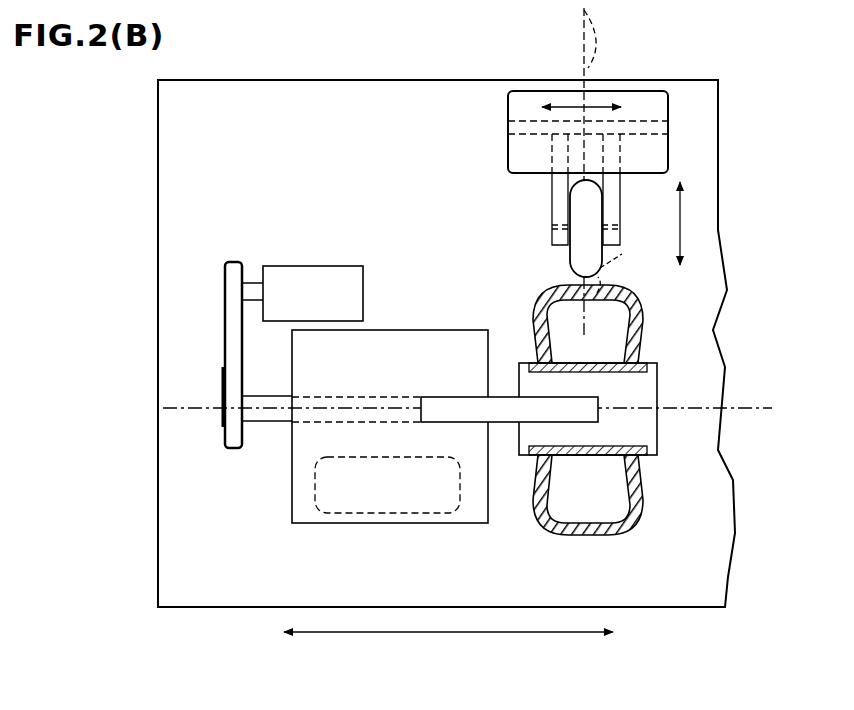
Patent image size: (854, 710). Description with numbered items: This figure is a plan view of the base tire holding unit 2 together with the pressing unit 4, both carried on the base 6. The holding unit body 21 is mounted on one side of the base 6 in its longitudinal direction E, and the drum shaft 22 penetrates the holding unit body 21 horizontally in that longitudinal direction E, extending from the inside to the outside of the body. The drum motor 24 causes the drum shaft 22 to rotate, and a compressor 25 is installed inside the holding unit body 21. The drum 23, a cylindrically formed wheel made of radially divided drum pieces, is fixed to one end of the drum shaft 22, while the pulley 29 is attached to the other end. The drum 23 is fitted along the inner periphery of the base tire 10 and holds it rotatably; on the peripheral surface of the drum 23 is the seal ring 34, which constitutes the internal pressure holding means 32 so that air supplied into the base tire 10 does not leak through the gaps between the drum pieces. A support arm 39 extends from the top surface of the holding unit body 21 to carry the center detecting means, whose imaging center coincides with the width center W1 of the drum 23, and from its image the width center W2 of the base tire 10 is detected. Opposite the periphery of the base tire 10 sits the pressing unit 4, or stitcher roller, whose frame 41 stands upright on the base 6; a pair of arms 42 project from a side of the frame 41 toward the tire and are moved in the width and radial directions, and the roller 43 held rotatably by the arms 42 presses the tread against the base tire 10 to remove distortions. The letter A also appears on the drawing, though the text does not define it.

The base tire holding unit 2 is at (302, 52).
The pressing unit 4 is at (504, 113).
The base 6 is at (737, 581).
The base tire 10 is at (586, 535).
The holding unit body 21 is at (408, 330).
The drum shaft 22 is at (348, 397).
The drum 23 is at (658, 427).
The drum motor 24 is at (275, 322).
The compressor 25 is at (382, 462).
The pulley 29 is at (228, 387).
The internal pressure holding means 32 is at (500, 430).
The seal ring 34 is at (576, 372).
The support arm 39 is at (468, 397).
The frame 41 is at (508, 157).
The arms 42 is at (559, 215).
The roller 43 is at (577, 259).
The rotation axis direction A is at (751, 408).
The longitudinal direction E is at (420, 634).
The width center of the drum W1 is at (603, 34).
The width center of the base tire W2 is at (625, 268).